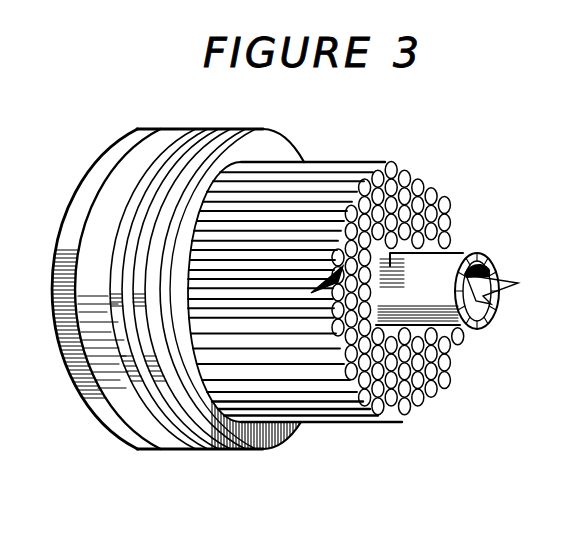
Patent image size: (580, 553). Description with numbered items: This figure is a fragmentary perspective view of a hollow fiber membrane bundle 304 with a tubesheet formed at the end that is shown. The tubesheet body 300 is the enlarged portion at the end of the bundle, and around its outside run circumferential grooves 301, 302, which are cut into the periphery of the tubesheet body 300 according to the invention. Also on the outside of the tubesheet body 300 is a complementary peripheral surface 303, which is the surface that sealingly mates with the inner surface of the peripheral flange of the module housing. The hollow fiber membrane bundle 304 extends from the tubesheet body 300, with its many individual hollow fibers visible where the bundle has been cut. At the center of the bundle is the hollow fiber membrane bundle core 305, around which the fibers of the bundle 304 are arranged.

The tubesheet body 300 is at (133, 416).
The circumferential groove 301 is at (158, 163).
The circumferential groove 302 is at (196, 137).
The complementary peripheral surface 303 is at (95, 409).
The hollow fiber membrane bundle 304 is at (370, 165).
The hollow fiber membrane bundle core 305 is at (422, 265).